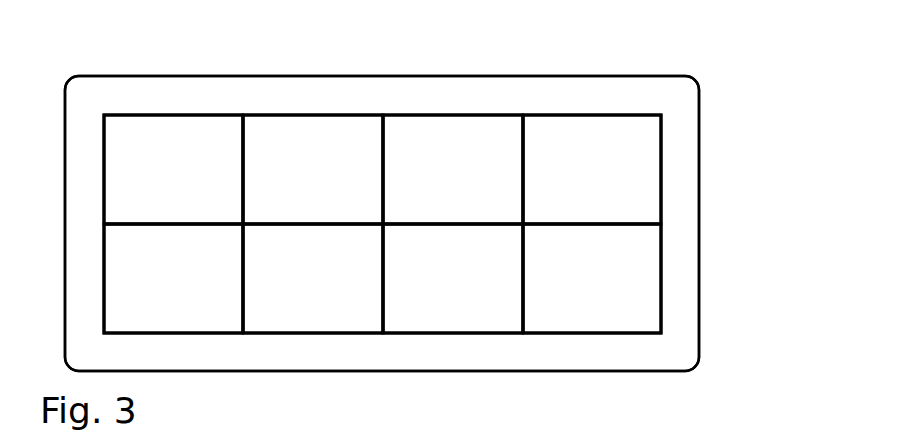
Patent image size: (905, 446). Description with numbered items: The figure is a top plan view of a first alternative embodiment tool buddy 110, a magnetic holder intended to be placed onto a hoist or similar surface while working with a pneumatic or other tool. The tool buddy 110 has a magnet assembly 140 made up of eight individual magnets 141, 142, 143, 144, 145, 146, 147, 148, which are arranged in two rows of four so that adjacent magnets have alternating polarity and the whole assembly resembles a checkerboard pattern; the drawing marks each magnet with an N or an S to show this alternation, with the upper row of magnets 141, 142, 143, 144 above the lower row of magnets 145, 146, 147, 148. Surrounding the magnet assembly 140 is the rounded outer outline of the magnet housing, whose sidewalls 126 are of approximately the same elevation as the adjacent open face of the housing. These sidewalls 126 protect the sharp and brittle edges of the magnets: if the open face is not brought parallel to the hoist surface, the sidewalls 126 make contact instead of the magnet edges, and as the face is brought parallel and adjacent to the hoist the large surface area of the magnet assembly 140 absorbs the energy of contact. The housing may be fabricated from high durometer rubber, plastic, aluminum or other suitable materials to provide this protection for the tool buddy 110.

The tool buddy 110 is at (702, 43).
The sidewalls 126 is at (699, 203).
The magnet assembly 140 is at (136, 135).
The magnet 141 is at (153, 126).
The magnet 142 is at (294, 125).
The magnet 143 is at (433, 125).
The magnet 144 is at (568, 126).
The magnet 145 is at (160, 323).
The magnet 146 is at (297, 318).
The magnet 147 is at (437, 320).
The magnet 148 is at (588, 320).